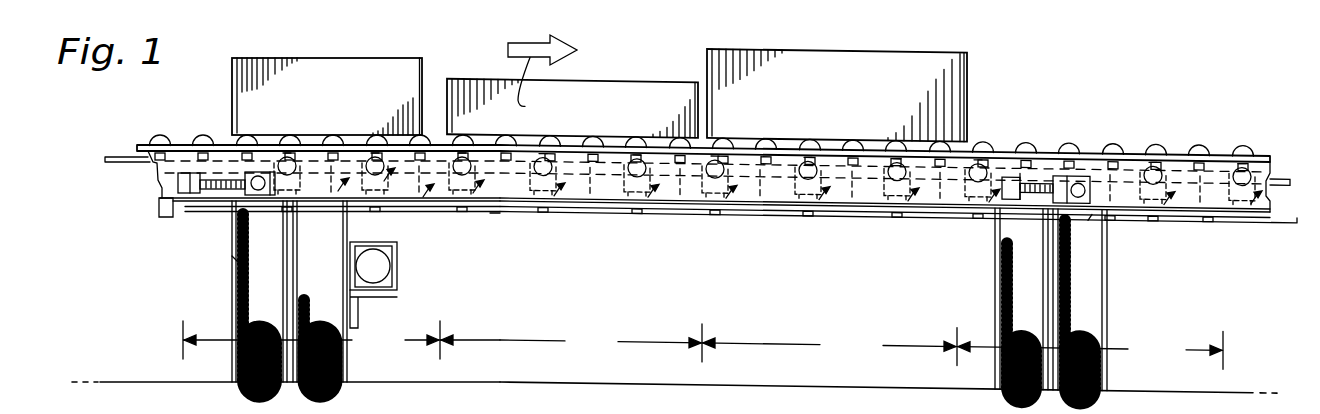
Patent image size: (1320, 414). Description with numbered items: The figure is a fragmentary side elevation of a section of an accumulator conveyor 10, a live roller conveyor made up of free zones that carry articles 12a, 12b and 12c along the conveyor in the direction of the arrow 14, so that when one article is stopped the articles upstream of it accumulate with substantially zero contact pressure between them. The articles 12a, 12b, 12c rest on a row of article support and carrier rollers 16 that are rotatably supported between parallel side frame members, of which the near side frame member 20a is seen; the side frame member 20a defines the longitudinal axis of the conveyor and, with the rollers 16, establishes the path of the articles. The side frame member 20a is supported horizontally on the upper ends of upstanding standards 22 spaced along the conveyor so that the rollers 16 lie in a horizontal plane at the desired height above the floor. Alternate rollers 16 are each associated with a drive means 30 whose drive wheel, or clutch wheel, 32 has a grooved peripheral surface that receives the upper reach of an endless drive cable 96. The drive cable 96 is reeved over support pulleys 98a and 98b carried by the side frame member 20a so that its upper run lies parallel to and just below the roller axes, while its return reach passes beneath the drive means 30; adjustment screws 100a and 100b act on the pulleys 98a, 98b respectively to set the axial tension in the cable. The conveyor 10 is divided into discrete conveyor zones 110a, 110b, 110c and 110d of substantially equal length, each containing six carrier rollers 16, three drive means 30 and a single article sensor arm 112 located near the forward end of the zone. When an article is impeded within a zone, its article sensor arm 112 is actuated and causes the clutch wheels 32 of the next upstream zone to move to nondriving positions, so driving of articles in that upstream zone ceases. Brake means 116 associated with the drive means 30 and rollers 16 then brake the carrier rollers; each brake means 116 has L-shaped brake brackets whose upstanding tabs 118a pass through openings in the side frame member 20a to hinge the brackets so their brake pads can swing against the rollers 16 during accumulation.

The accumulator conveyor 10 is at (1119, 99).
The article 12a is at (945, 72).
The article 12b is at (610, 98).
The article 12c is at (355, 45).
The arrow 14 is at (508, 43).
The article support and carrier rollers 16 is at (233, 142).
The side frame member 20a is at (160, 173).
The upstanding standards 22 is at (230, 293).
The drive means 30 is at (402, 207).
The drive wheel 32 is at (1276, 186).
The drive cable 96 is at (494, 248).
The support pulley 98a is at (232, 258).
The support pulley 98b is at (1090, 212).
The adjustment screw 100a is at (207, 196).
The adjustment screw 100b is at (1012, 196).
The conveyor zone 110a is at (1090, 349).
The conveyor zone 110b is at (829, 345).
The conveyor zone 110c is at (570, 341).
The conveyor zone 110d is at (311, 340).
The article sensor arm 112 is at (437, 134).
The brake means 116 is at (337, 190).
The upstanding tab 118a is at (325, 183).